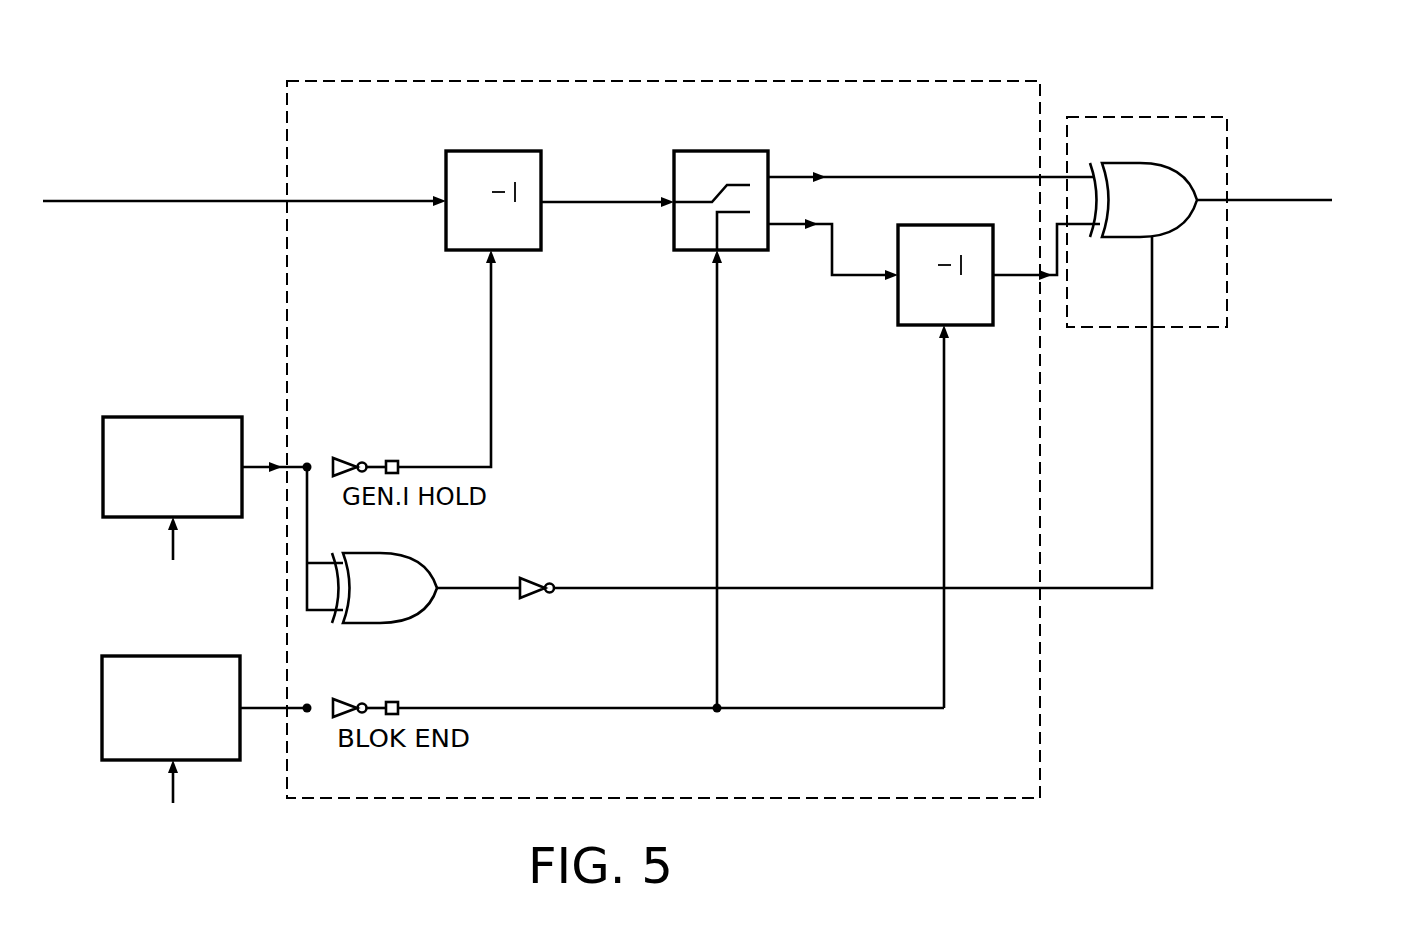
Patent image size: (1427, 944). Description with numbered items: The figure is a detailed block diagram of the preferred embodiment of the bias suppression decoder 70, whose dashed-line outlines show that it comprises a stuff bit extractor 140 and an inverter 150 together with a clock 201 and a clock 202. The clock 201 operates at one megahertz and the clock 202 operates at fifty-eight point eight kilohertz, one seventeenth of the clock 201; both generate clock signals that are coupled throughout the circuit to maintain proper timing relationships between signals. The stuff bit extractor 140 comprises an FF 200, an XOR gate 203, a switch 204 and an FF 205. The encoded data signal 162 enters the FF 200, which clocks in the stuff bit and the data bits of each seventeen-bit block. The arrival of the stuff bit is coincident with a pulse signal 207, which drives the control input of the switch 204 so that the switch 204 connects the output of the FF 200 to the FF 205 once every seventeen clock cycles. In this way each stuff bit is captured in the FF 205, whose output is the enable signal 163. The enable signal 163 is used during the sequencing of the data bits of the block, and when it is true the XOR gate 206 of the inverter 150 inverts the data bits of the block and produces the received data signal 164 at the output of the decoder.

The bias suppression decoder 70 is at (668, 456).
The stuff bit extractor 140 is at (602, 81).
The inverter 150 is at (1112, 117).
The encoded data signal 162 is at (104, 201).
The enable signal 163 is at (1022, 277).
The received data signal 164 is at (1257, 200).
The FF 200 is at (470, 250).
The clock 201 is at (142, 417).
The clock 202 is at (142, 656).
The XOR gate 203 is at (407, 567).
The switch 204 is at (740, 252).
The FF 205 is at (912, 326).
The XOR gate 206 is at (1121, 238).
The pulse signal 207 is at (717, 456).